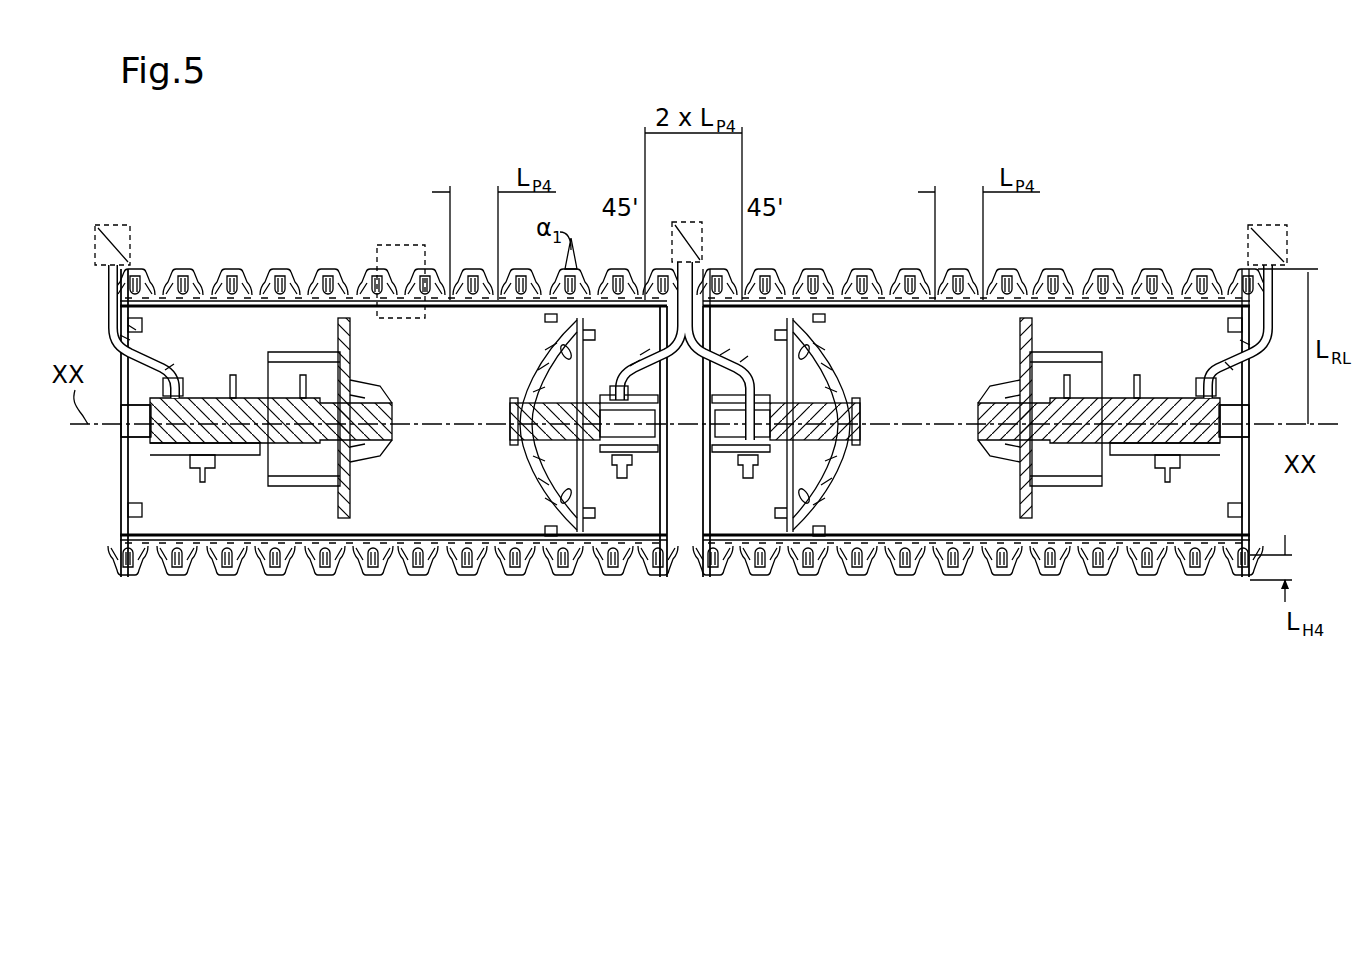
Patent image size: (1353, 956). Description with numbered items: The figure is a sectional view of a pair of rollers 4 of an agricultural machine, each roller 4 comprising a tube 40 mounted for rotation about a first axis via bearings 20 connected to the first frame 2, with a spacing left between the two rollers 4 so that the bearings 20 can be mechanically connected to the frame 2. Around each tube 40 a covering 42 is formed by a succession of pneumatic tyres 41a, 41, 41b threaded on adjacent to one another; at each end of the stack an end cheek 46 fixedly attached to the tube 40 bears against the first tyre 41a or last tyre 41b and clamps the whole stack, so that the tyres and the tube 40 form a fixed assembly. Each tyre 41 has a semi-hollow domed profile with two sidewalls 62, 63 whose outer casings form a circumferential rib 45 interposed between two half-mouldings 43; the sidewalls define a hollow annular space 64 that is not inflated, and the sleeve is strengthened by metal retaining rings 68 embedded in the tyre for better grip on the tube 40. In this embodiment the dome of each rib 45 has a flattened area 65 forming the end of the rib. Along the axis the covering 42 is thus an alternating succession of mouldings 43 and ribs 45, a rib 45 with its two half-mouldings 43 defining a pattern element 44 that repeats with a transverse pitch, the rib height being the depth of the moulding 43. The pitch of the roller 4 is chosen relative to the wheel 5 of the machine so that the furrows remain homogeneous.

The first frame 2 is at (113, 206).
The roller 4 is at (373, 597).
The wheel 5 is at (1003, 593).
The bearings 20 is at (108, 293).
The tube 40 is at (187, 555).
The tyre 41 is at (449, 584).
The first tyre 41a is at (127, 585).
The last tyre 41b is at (660, 590).
The covering 42 is at (1150, 262).
The moulding 43 is at (1167, 553).
The pattern element 44 is at (393, 238).
The circumferential rib 45 is at (808, 578).
The end cheek 46 is at (148, 285).
The sidewall 62 is at (252, 290).
The sidewall 63 is at (300, 290).
The hollow annular space 64 is at (1185, 292).
The flattened area 65 is at (322, 270).
The metal retaining rings 68 is at (880, 290).